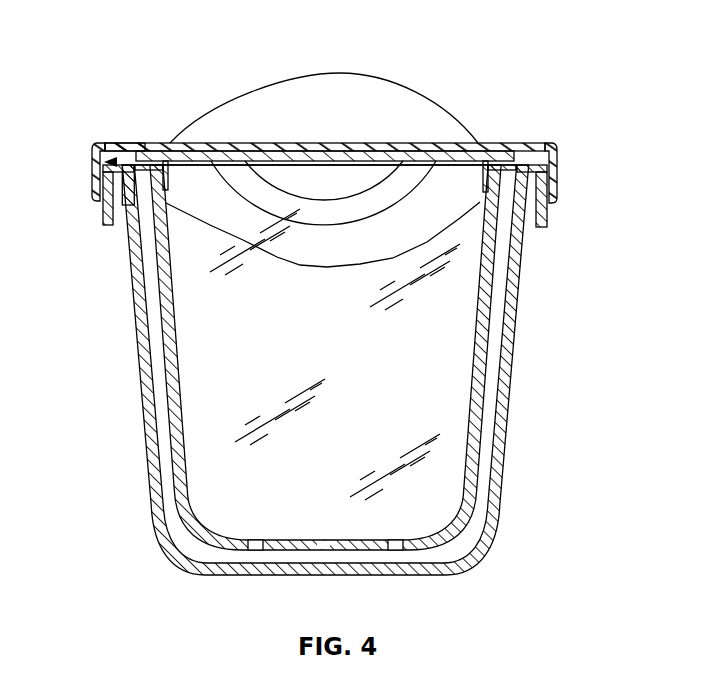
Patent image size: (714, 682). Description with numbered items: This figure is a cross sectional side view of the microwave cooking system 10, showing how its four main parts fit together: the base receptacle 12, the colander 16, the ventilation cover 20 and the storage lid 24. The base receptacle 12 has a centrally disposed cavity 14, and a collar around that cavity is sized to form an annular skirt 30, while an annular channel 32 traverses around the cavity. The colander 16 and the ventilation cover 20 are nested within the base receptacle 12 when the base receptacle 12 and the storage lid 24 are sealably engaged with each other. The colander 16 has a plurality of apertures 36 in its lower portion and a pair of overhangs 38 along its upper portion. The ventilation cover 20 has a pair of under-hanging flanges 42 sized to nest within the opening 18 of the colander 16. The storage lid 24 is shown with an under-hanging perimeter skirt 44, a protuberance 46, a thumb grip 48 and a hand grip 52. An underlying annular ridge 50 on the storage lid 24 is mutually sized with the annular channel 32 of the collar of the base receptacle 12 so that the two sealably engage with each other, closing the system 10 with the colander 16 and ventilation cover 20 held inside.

The microwave cooking system 10 is at (118, 54).
The base receptacle 12 is at (304, 370).
The centrally disposed cavity 14 is at (494, 366).
The colander 16 is at (358, 391).
The opening 18 is at (428, 330).
The ventilation cover 20 is at (332, 152).
The storage lid 24 is at (148, 150).
The annular skirt 30 is at (104, 216).
The annular channel 32 is at (99, 158).
The apertures 36 is at (256, 550).
The overhangs 38 is at (128, 205).
The under-hanging flanges 42 is at (169, 184).
The under-hanging perimeter skirt 44 is at (560, 176).
The protuberance 46 is at (386, 100).
The thumb grip 48 is at (333, 177).
The underlying annular ridge 50 is at (110, 158).
The hand grip 52 is at (337, 240).